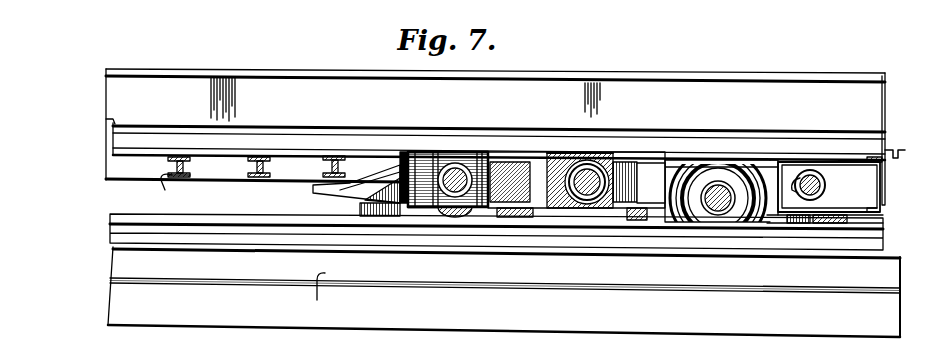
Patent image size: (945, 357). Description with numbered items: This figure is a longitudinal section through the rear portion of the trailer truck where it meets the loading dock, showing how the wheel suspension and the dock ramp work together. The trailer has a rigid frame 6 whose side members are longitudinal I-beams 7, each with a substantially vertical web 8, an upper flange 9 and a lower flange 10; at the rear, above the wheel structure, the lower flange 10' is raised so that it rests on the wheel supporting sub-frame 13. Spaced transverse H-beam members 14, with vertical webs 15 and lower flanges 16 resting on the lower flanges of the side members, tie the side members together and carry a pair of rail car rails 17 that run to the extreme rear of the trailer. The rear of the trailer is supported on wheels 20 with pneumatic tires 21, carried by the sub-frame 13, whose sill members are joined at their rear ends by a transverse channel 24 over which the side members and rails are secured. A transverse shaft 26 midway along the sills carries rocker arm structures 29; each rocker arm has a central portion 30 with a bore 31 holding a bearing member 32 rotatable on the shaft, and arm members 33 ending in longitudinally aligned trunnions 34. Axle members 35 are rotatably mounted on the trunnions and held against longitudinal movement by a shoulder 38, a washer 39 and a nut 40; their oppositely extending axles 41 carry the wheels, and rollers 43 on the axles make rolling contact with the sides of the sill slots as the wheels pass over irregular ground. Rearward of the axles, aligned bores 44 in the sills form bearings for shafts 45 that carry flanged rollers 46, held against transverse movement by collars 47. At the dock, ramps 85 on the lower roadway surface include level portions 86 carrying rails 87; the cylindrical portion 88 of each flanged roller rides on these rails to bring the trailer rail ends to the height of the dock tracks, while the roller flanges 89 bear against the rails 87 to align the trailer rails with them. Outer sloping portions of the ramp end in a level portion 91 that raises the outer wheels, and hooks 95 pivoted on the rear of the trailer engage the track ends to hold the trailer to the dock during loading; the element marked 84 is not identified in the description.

The frame 6 is at (105, 70).
The I-beam side members 7 is at (117, 93).
The webs of side members 8 is at (113, 165).
The upper flanges of side members 9 is at (272, 73).
The lower flanges of side members 10 is at (263, 181).
The raised lower flange 10' is at (406, 169).
The sub-frame 13 is at (350, 198).
The transverse members 14 is at (185, 162).
The webs of transverse members 15 is at (167, 168).
The lower flanges of transverse members 16 is at (171, 188).
The rail car rails 17 is at (110, 118).
The wheels 20 is at (673, 166).
The pneumatic tires 21 is at (557, 213).
The channel 24 is at (886, 196).
The shaft 26 is at (598, 152).
The rocker arm structures 29 is at (487, 208).
The central portion 30 is at (610, 163).
The bore 31 is at (580, 160).
The bearing member 32 is at (562, 181).
The arm members 33 is at (647, 190).
The trunnions 34 is at (400, 173).
The axle members 35 is at (437, 210).
The shoulder 38 is at (487, 153).
The washer 39 is at (432, 153).
The nut 40 is at (417, 210).
The axles 41 is at (455, 163).
The rollers 43 is at (720, 192).
The aligned bores 44 is at (807, 182).
The shafts 45 is at (827, 187).
The flanged rollers 46 is at (848, 223).
The collars 47 is at (790, 194).
The base plate 84 is at (113, 322).
The ramps 85 is at (888, 283).
The level portions 86 is at (113, 245).
The rails 87 is at (110, 212).
The cylindrical portion 88 is at (832, 223).
The flanges 89 is at (850, 219).
The level portion 91 is at (328, 293).
The hooks 95 is at (906, 152).